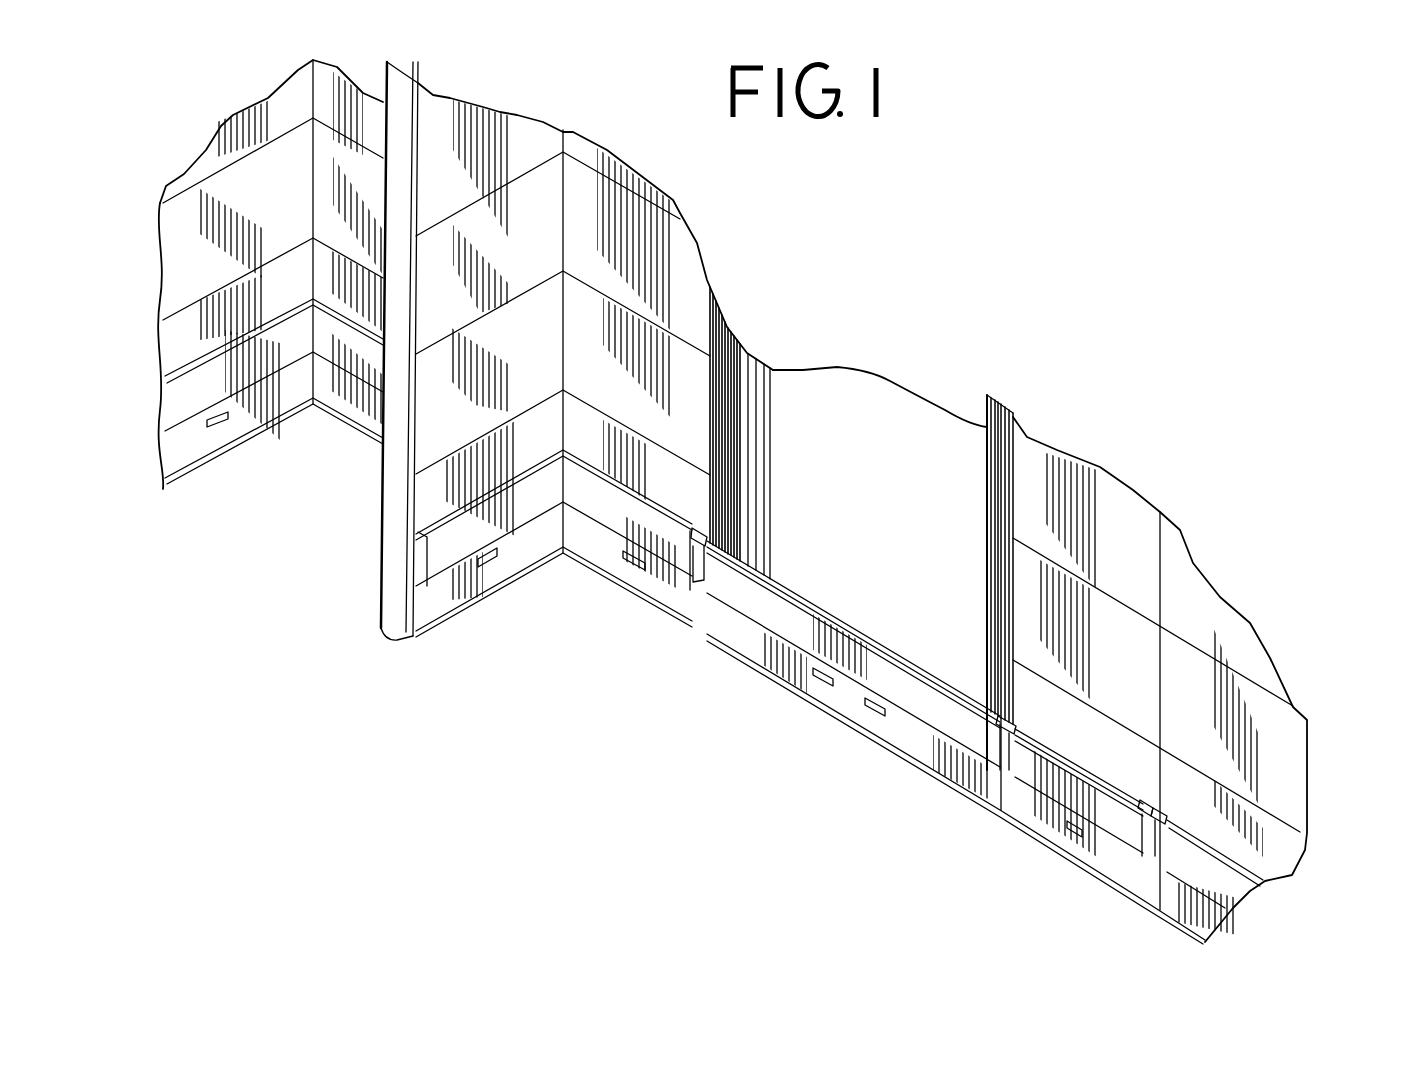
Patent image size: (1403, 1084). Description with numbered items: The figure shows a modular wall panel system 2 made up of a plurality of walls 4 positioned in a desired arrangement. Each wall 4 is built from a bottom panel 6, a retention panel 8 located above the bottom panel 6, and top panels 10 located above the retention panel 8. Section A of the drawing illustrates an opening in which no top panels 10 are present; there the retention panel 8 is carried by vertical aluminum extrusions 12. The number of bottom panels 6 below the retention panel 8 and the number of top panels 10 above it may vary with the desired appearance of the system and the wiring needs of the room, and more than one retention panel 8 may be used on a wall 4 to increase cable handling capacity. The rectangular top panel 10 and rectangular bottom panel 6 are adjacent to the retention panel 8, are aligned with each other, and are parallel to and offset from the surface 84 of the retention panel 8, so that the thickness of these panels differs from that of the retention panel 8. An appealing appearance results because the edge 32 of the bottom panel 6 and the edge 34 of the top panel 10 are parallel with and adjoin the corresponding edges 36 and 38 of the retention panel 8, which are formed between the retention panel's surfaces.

The modular wall panel system 2 is at (1110, 360).
The wall 4 is at (670, 200).
The bottom panel 6 is at (640, 577).
The retention panel 8 is at (610, 520).
The top panel 10 is at (690, 280).
The vertical aluminum extrusion 12 is at (740, 348).
The edge of bottom panel 32 is at (697, 587).
The edge of top panel 34 is at (692, 528).
The edge of retention panel 36 is at (682, 560).
The edge of retention panel 38 is at (700, 528).
The surface of retention panel 84 is at (590, 497).
The section A is at (893, 377).